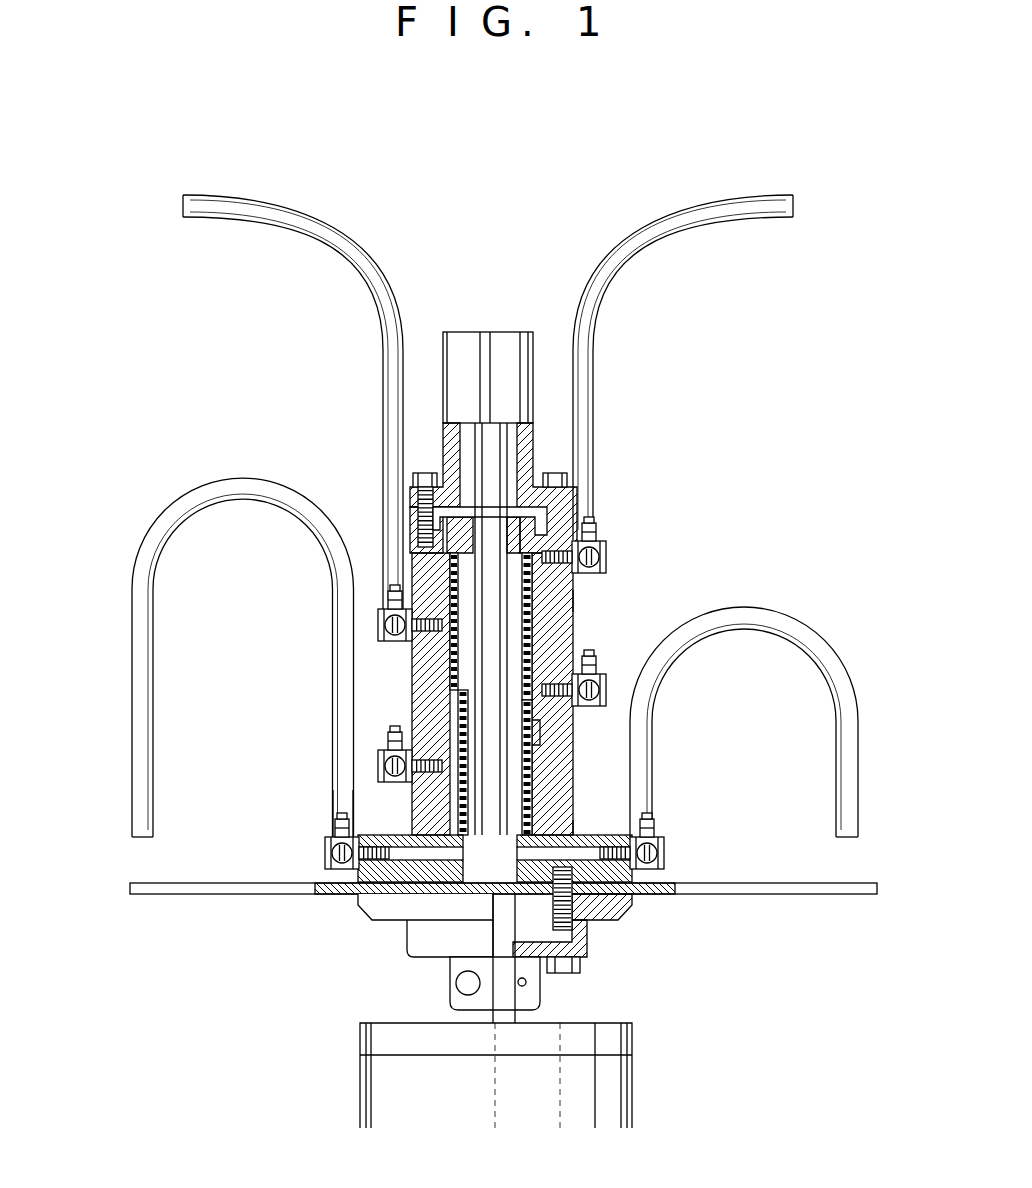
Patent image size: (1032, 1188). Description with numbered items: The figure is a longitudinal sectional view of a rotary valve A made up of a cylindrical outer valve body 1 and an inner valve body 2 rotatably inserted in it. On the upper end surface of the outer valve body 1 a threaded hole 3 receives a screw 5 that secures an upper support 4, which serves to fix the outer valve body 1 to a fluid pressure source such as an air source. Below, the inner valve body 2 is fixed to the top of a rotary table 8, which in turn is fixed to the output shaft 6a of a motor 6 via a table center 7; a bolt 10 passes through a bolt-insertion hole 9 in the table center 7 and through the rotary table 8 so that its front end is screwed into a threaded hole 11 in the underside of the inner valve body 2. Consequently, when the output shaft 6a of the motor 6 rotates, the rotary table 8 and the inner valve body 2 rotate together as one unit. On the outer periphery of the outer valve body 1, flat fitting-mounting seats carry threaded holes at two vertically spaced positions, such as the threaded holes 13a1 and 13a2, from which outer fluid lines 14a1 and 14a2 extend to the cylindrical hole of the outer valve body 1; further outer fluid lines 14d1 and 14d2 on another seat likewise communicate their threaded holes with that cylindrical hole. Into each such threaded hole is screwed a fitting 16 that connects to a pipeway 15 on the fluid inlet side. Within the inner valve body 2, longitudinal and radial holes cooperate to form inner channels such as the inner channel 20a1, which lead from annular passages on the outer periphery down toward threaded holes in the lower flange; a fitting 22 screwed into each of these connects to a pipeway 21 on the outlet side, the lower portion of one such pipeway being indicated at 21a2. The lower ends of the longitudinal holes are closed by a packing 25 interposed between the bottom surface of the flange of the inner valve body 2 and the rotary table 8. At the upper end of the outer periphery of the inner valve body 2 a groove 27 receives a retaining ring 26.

The rotary valve A is at (503, 621).
The outer valve body 1 is at (578, 635).
The inner valve body 2 is at (528, 778).
The threaded hole 3 is at (418, 518).
The upper support 4 is at (460, 330).
The screw 5 is at (423, 477).
The motor 6 is at (635, 1078).
The output shaft 6a is at (520, 990).
The table center 7 is at (598, 920).
The rotary table 8 is at (770, 894).
The bolt-insertion hole 9 is at (585, 940).
The bolt 10 is at (628, 905).
The threaded hole 11 is at (634, 868).
The threaded hole 13a1 is at (572, 563).
The threaded hole 13a2 is at (548, 698).
The outer fluid line 14a1 is at (545, 530).
The outer fluid line 14a2 is at (545, 732).
The outer fluid line 14d1 is at (450, 607).
The outer fluid line 14d2 is at (455, 737).
The pipeway 15 is at (327, 233).
The fitting 16 is at (607, 547).
The inner channel 20a1 is at (565, 600).
The pipeway 21 is at (762, 610).
The handle leg 21a2 is at (445, 824).
The fitting 22 is at (325, 853).
The packing 25 is at (453, 894).
The retaining ring 26 is at (552, 508).
The groove 27 is at (547, 475).